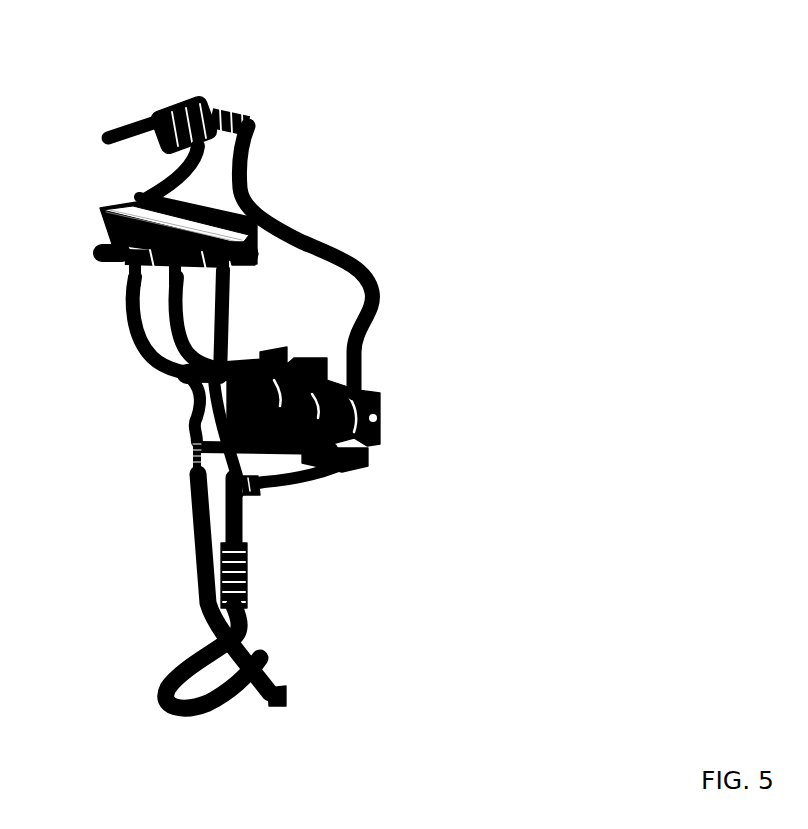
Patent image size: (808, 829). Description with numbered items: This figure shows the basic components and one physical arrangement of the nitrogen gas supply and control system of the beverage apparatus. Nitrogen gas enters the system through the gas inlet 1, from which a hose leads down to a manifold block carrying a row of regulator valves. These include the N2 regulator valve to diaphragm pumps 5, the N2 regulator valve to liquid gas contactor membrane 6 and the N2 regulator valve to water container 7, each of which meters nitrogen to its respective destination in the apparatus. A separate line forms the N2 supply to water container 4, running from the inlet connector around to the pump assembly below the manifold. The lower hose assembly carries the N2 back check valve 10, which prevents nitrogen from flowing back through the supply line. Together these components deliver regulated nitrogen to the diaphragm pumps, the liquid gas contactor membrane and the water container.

The gas inlet 1 is at (143, 103).
The N2 supply to water container 4 is at (250, 102).
The N2 regulator valve to diaphragm pumps 5 is at (100, 251).
The N2 regulator valve to liquid gas contactor membrane 6 is at (142, 266).
The N2 regulator valve to water container 7 is at (182, 276).
The N2 back check valve 10 is at (247, 580).